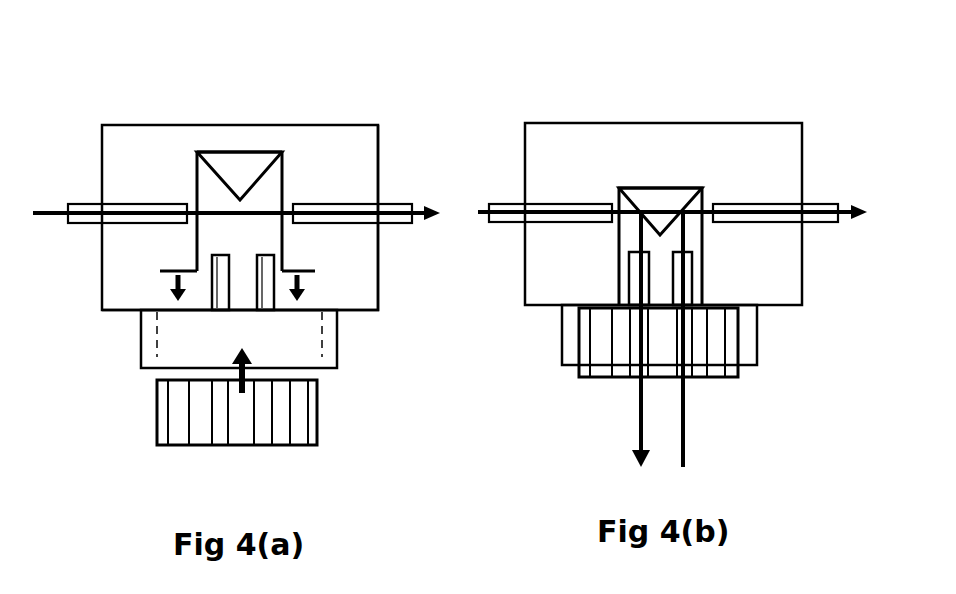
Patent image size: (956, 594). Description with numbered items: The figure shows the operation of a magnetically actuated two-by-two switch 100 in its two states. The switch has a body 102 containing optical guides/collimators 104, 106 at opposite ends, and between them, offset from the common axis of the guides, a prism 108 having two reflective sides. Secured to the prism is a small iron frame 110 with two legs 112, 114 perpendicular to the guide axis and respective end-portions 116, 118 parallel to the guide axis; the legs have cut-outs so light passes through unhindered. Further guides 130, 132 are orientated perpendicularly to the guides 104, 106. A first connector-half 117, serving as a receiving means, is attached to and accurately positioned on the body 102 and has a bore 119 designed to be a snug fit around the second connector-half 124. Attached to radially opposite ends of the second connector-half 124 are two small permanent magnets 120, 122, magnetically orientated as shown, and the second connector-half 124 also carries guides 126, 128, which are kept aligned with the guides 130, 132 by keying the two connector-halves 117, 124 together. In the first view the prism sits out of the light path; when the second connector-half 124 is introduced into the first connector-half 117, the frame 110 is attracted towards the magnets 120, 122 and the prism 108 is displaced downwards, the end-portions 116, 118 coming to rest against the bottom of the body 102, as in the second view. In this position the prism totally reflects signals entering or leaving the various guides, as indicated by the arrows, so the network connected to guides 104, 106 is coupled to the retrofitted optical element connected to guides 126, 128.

The 2×2 switch 100 is at (398, 124).
The body 102 is at (380, 280).
The optical guide/collimator 104 is at (78, 225).
The optical guide/collimator 106 is at (392, 225).
The prism 108 is at (248, 166).
The iron frame 110 is at (217, 132).
The leg 112 is at (196, 175).
The leg 114 is at (285, 182).
The end-portion 116 is at (175, 272).
The first connector-half 117 is at (140, 353).
The end-portion 118 is at (307, 273).
The bore 119 is at (310, 350).
The permanent magnet 120 is at (176, 408).
The permanent magnet 122 is at (265, 403).
The second connector-half 124 is at (158, 445).
The guide 126 is at (200, 418).
The guide 128 is at (265, 403).
The guide 130 is at (208, 254).
The guide 132 is at (277, 254).